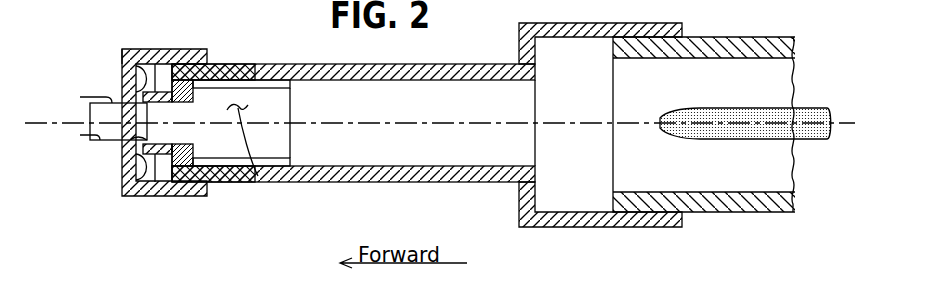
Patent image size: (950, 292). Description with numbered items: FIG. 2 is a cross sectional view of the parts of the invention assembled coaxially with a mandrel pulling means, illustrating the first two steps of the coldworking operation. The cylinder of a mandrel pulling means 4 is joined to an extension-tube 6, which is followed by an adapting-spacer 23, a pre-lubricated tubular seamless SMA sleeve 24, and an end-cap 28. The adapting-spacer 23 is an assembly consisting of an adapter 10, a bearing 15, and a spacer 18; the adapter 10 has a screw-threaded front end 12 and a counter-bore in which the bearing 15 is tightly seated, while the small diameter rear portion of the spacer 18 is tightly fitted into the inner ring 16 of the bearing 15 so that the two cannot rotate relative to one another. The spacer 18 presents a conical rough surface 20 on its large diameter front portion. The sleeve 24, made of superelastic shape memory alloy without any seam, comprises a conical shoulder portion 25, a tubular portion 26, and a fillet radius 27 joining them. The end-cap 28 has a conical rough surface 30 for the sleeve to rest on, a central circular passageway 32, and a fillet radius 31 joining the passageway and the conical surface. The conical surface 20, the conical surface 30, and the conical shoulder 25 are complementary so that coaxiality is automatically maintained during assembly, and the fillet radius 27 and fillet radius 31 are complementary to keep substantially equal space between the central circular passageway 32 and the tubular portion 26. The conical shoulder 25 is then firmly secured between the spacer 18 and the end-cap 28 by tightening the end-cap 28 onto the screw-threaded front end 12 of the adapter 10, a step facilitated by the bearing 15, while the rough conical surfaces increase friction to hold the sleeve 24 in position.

The cylinder of a mandrel pulling means 4 is at (725, 203).
The extension-tube 6 is at (567, 218).
The adapter 10 is at (228, 168).
The screw-threaded front end 12 is at (213, 182).
The bearing 15 is at (214, 81).
The inner ring 16 is at (248, 64).
The spacer 18 is at (157, 92).
The conical rough surface 20 is at (145, 90).
The adapting-spacer 23 is at (258, 176).
The tubular seamless SMA sleeve 24 is at (105, 96).
The conical shoulder portion 25 is at (153, 154).
The tubular portion 26 is at (92, 133).
The fillet radius 27 is at (145, 140).
The end-cap 28 is at (200, 63).
The conical rough surface 30 is at (122, 63).
The fillet radius 31 is at (130, 160).
The central circular passageway 32 is at (122, 88).